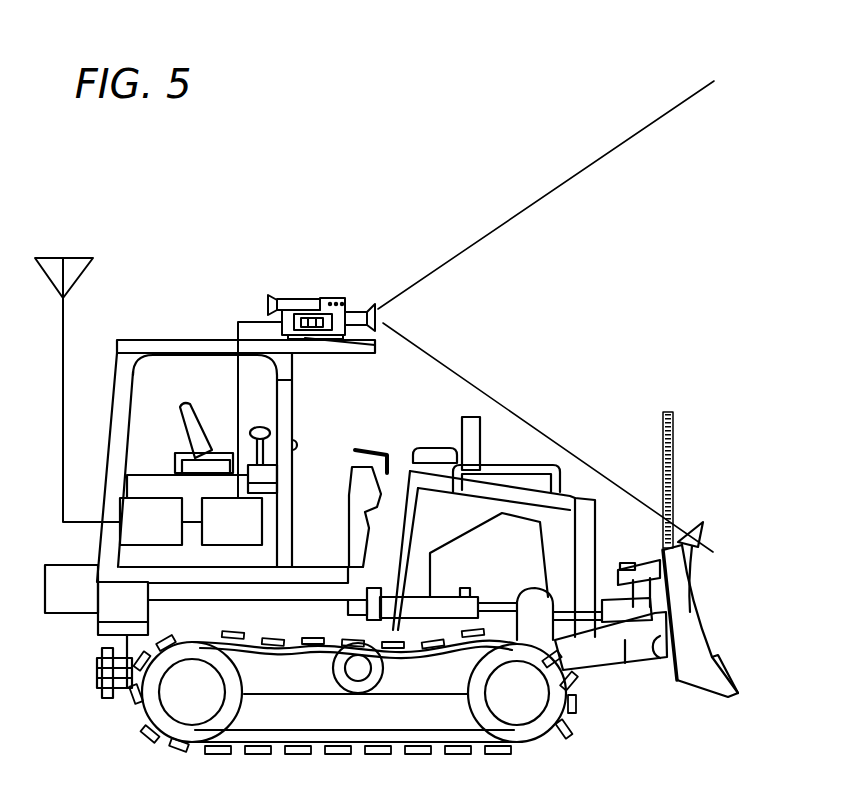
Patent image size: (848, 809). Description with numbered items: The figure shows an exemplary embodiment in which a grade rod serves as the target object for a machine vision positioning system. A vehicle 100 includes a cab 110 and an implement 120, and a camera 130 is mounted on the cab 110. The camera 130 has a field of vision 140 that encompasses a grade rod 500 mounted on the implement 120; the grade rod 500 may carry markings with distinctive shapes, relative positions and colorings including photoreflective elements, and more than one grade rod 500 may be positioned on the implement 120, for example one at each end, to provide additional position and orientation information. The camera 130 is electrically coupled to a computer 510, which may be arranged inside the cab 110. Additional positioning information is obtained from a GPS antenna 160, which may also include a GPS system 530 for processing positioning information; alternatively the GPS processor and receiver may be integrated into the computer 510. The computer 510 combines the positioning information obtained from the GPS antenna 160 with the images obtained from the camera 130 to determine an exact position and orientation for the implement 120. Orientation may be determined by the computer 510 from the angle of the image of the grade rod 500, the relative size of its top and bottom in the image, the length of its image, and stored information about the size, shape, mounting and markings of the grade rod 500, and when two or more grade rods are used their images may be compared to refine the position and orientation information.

The vehicle 100 is at (213, 203).
The cab 110 is at (166, 338).
The implement 120 is at (683, 615).
The camera 130 is at (323, 298).
The field of vision 140 is at (517, 212).
The GPS antenna 160 is at (54, 255).
The grade rod 500 is at (674, 446).
The computer 510 is at (214, 536).
The GPS system 530 is at (133, 536).